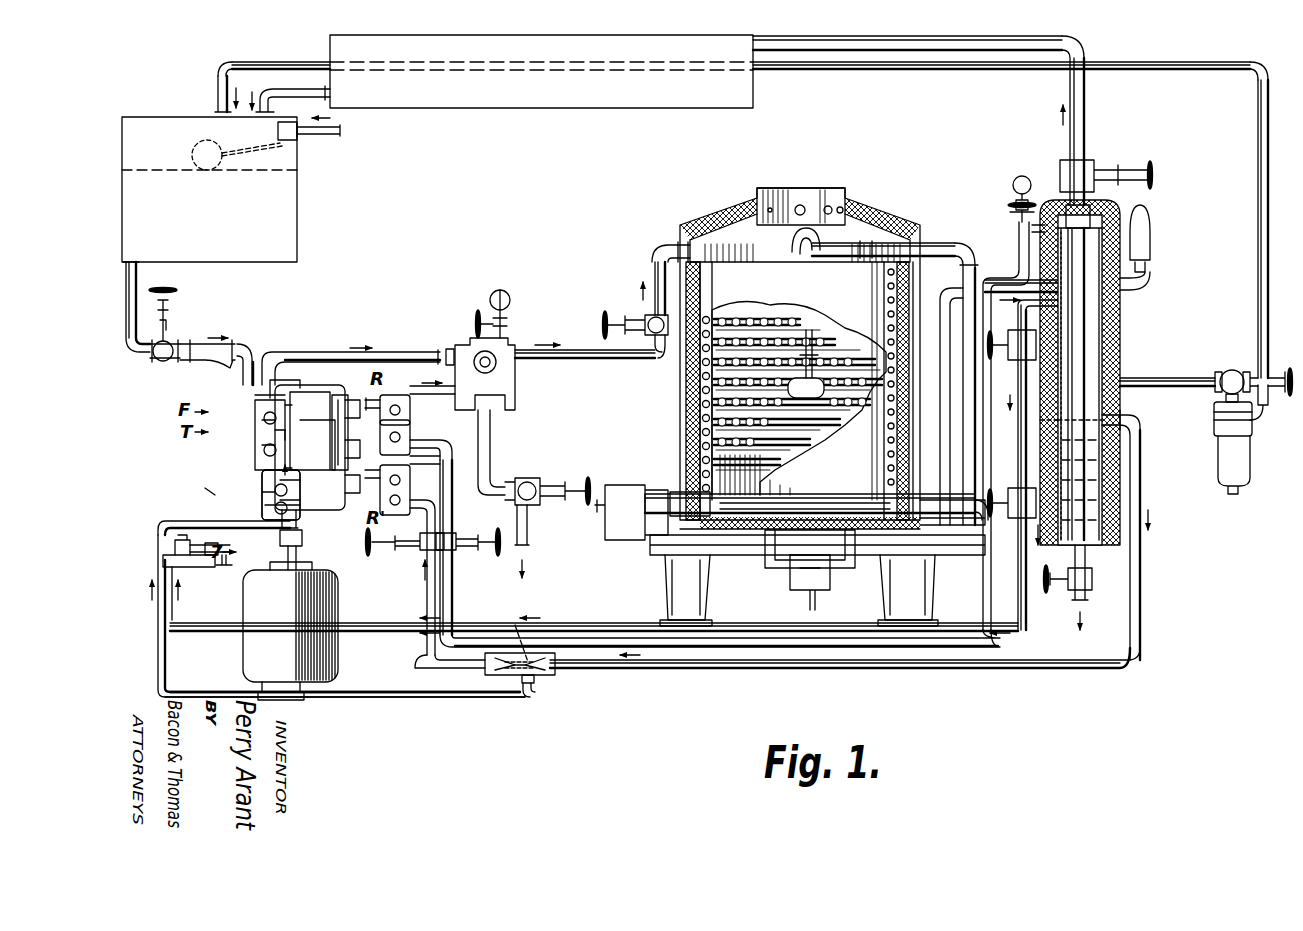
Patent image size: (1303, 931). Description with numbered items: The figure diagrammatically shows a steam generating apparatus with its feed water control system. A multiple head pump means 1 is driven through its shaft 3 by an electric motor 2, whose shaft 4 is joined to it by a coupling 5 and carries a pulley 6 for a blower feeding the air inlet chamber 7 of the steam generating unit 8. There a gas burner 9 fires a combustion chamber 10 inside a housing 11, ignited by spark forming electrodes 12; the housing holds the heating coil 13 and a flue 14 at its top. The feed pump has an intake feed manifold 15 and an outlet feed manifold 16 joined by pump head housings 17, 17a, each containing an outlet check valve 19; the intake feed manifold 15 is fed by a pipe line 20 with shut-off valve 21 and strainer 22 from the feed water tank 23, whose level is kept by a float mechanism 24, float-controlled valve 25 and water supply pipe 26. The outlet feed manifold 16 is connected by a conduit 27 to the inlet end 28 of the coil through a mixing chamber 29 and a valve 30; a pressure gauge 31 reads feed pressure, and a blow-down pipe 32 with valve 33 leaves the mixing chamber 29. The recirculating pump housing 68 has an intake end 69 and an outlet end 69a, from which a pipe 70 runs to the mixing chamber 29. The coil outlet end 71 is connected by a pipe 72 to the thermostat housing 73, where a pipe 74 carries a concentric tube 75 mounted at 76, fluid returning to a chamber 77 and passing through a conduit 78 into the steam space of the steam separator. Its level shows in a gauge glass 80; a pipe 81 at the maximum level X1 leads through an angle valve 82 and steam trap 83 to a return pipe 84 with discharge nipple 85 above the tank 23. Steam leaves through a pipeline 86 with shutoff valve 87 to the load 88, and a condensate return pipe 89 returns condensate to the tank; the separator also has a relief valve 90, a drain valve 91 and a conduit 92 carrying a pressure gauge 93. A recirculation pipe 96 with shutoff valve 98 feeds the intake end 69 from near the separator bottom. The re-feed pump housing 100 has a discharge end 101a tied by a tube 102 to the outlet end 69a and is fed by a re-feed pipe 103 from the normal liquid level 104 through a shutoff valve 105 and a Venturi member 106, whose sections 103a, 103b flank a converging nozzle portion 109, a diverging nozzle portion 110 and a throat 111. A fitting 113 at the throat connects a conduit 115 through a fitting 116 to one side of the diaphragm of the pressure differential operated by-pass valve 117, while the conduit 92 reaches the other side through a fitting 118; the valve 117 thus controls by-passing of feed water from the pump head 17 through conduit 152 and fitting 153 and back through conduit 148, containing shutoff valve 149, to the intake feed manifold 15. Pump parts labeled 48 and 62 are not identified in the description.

The pump means 1 is at (313, 392).
The electric motor 2 is at (244, 650).
The shaft 3 is at (300, 522).
The motor shaft 4 is at (297, 556).
The coupling 5 is at (302, 540).
The pulley 6 is at (302, 704).
The air inlet chamber 7 is at (855, 558).
The steam generating unit 8 is at (892, 212).
The gas burner 9 is at (792, 574).
The combustion chamber 10 is at (788, 462).
The housing 11 is at (686, 440).
The spark forming electrodes 12 is at (822, 546).
The heating coil 13 is at (842, 394).
The flue 14 is at (814, 198).
The intake feed manifold 15 is at (275, 492).
The outlet feed manifold 16 is at (278, 432).
The pump head housing 17 is at (215, 500).
The pump head housing 17a is at (240, 395).
The outlet check valve 19 is at (1118, 330).
The pipe line 20 is at (139, 268).
The shut-off valve 21 is at (163, 362).
The strainer 22 is at (222, 343).
The feed water tank 23 is at (298, 238).
The float mechanism 24 is at (262, 150).
The float-controlled valve 25 is at (296, 148).
The water supply pipe 26 is at (337, 136).
The conduit 27 is at (406, 358).
The inlet end 28 is at (666, 242).
The mixing chamber 29 is at (458, 342).
The valve 30 is at (642, 316).
The pressure gauge 31 is at (511, 300).
The pipe 32 is at (528, 522).
The valve 33 is at (522, 483).
The pump valve 48 is at (288, 505).
The pump ports 62 is at (292, 407).
The recirculating pump housing 68 is at (406, 410).
The intake end 69 is at (406, 433).
The outlet end 69a is at (398, 392).
The pipe 70 is at (488, 392).
The outlet end 71 is at (830, 260).
The pipe 72 is at (963, 278).
The housing 73 is at (948, 556).
The pipe 74 is at (832, 494).
The tube 75 is at (808, 494).
The tube mounting 76 is at (968, 496).
The chamber 77 is at (935, 530).
The conduit 78 is at (943, 316).
The gauge glass 80 is at (1018, 408).
The pipe 81 is at (1200, 380).
The angle valve 82 is at (1240, 376).
The steam trap 83 is at (1218, 472).
The return pipe 84 is at (262, 48).
The discharge nipple 85 is at (216, 88).
The pipeline 86 is at (1086, 97).
The shutoff valve 87 is at (1100, 165).
The load 88 is at (754, 99).
The condensate return pipe 89 is at (280, 90).
The safety or relief valve 90 is at (1152, 244).
The blow-off or drain valve 91 is at (1092, 578).
The conduit 92 is at (1019, 250).
The pressure gauge 93 is at (1022, 178).
The recirculation pipe 96 is at (452, 472).
The shutoff valve 98 is at (460, 538).
The re-feed pump housing 100 is at (408, 480).
The discharge end 101a is at (404, 478).
The tube 102 is at (332, 446).
The re-feed pipe 103 is at (676, 668).
The re-feed pipe section 103a is at (1038, 668).
The re-feed pipe section 103b is at (468, 672).
The normal liquid level 104 is at (410, 514).
The shutoff valve 105 is at (398, 548).
The Venturi member 106 is at (560, 670).
The nozzle portion 109 is at (536, 676).
The nozzle portion 110 is at (512, 675).
The throat 111 is at (515, 624).
The fitting 113 is at (528, 698).
The conduit 115 is at (404, 698).
The fitting 116 is at (158, 547).
The by-pass valve 117 is at (196, 540).
The fitting 118 is at (172, 570).
The by-pass conduit 148 is at (232, 550).
The shutoff valve 149 is at (224, 568).
The by-pass conduit 152 is at (170, 482).
The fitting 153 is at (212, 492).
The maximum permissible liquid level X1 is at (1092, 412).